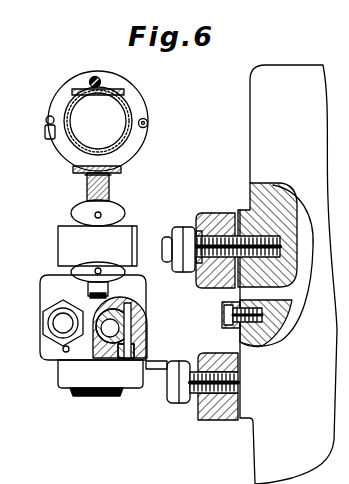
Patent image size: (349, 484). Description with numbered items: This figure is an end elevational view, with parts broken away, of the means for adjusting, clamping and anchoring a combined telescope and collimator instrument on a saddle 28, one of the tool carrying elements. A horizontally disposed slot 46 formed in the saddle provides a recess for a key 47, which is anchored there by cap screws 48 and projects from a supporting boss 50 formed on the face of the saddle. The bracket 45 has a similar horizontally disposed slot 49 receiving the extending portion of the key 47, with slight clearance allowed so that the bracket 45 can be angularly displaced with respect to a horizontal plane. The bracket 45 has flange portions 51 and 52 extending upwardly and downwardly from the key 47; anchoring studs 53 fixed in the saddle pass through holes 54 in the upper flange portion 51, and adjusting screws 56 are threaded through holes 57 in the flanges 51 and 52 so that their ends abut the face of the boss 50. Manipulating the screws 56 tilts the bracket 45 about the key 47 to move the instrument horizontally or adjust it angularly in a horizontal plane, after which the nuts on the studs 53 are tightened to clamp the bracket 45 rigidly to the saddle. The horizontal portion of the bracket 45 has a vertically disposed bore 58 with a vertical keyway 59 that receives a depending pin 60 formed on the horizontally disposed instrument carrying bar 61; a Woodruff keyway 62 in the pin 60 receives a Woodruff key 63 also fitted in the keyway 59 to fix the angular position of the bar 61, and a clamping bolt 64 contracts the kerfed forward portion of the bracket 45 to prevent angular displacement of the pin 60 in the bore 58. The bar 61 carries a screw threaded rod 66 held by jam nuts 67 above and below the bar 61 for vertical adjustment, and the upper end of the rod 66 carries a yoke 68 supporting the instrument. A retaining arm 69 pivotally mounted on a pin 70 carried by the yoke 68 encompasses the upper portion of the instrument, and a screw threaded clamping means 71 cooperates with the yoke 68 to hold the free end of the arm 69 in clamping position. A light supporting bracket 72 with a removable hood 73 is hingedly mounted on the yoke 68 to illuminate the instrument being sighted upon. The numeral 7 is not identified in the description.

The partial numeral 7 is at (11, 101).
The saddle 28 is at (257, 99).
The bracket 45 is at (152, 369).
The horizontally disposed slot 46 is at (258, 313).
The key 47 is at (256, 346).
The cap screws 48 is at (222, 318).
The horizontally disposed slot 49 is at (226, 311).
The supporting boss 50 is at (240, 203).
The flange portion 51 is at (207, 212).
The flange portion 52 is at (216, 421).
The anchoring studs 53 is at (259, 235).
The holes 54 is at (203, 232).
The adjusting screws 56 is at (178, 405).
The holes 57 is at (254, 370).
The vertically disposed bore 58 is at (122, 343).
The vertical keyway 59 is at (160, 356).
The depending pin 60 is at (103, 343).
The instrument carrying bar 61 is at (68, 244).
The Woodruff keyway 62 is at (120, 330).
The Woodruff key 63 is at (130, 312).
The clamping bolt 64 is at (50, 331).
The screw threaded rods 66 is at (88, 194).
The jam nuts 67 is at (104, 270).
The yoke 68 is at (66, 162).
The retaining arm 69 is at (62, 91).
The pin 70 is at (148, 123).
The screw threaded clamping means 71 is at (48, 135).
The light supporting bracket 72 is at (112, 175).
The removable hood 73 is at (8, 213).